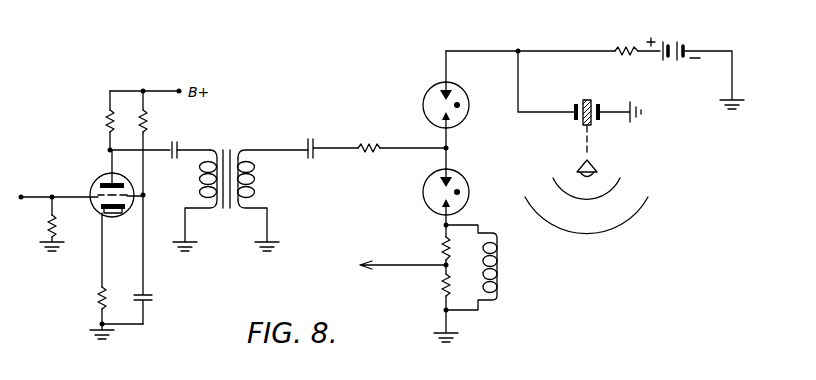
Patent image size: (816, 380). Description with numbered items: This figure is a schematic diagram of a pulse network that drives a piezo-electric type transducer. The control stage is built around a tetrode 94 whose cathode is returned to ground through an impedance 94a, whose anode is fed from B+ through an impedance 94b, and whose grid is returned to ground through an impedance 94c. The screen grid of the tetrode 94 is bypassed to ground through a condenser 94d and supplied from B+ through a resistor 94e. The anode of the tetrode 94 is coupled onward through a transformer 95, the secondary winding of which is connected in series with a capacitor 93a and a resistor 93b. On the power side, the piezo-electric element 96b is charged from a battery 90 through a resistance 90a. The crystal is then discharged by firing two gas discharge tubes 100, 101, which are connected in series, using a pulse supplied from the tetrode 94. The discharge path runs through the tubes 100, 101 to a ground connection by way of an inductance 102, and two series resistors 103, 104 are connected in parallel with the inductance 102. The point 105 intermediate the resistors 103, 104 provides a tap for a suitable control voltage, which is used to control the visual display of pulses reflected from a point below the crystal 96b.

The battery 90 is at (682, 47).
The resistance 90a is at (627, 39).
The capacitor 93a is at (311, 136).
The resistor 93b is at (373, 140).
The tetrode 94 is at (100, 176).
The impedance 94a is at (98, 293).
The impedance 94b is at (106, 114).
The impedance 94c is at (47, 230).
The condenser 94d is at (155, 298).
The resistor 94e is at (150, 115).
The transformer 95 is at (235, 141).
The piezo-electric element 96b is at (580, 122).
The gas discharge tube 100 is at (431, 99).
The gas discharge tube 101 is at (457, 180).
The inductance 102 is at (499, 271).
The resistor 103 is at (444, 241).
The resistor 104 is at (444, 276).
The point 105 is at (449, 268).